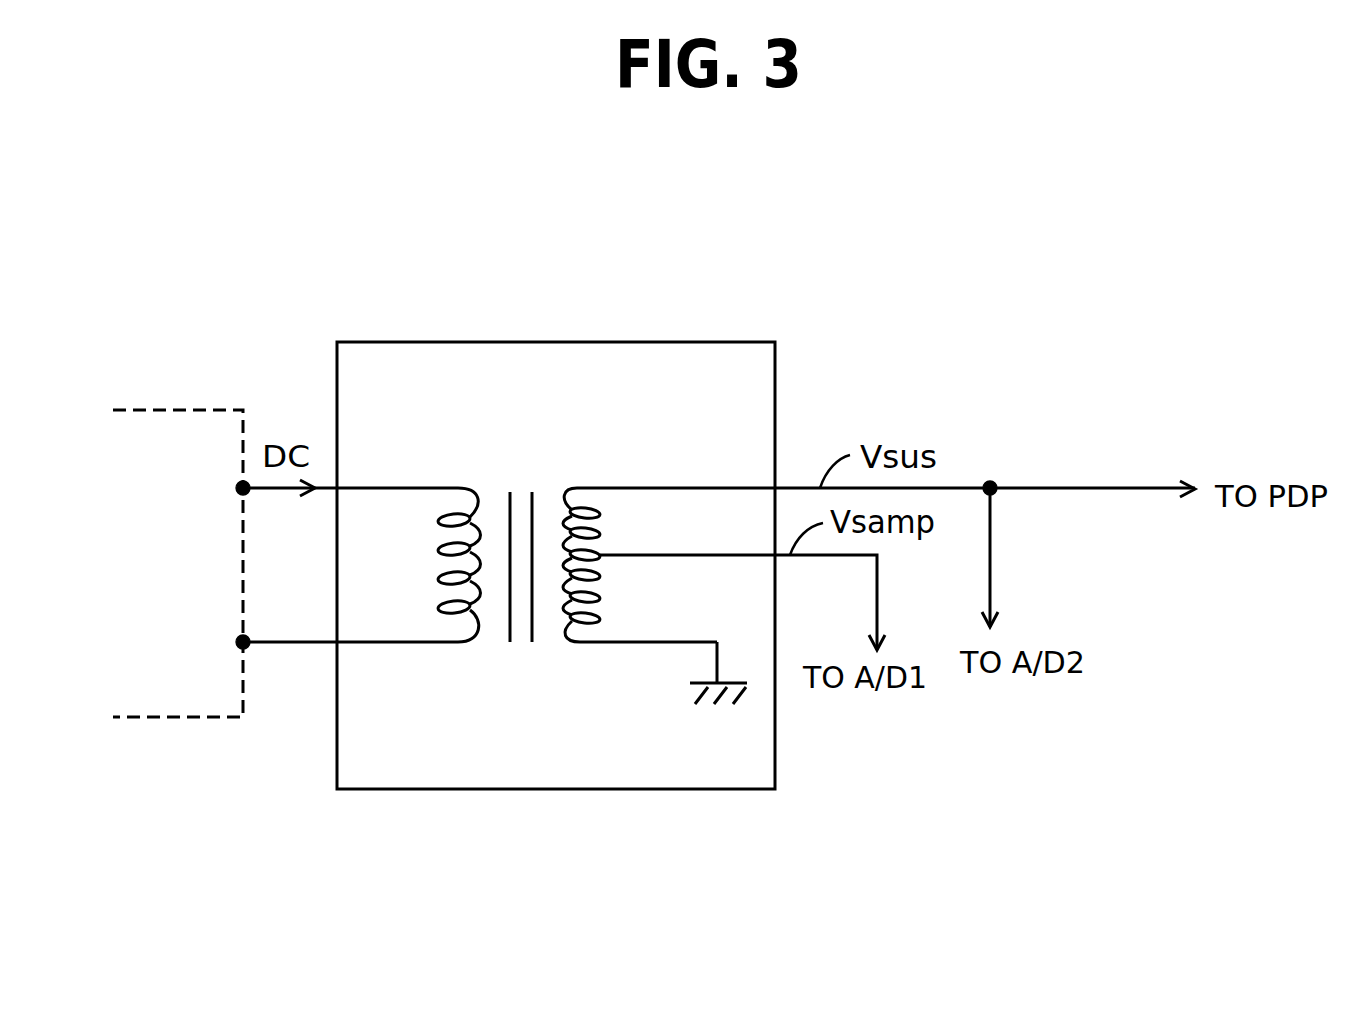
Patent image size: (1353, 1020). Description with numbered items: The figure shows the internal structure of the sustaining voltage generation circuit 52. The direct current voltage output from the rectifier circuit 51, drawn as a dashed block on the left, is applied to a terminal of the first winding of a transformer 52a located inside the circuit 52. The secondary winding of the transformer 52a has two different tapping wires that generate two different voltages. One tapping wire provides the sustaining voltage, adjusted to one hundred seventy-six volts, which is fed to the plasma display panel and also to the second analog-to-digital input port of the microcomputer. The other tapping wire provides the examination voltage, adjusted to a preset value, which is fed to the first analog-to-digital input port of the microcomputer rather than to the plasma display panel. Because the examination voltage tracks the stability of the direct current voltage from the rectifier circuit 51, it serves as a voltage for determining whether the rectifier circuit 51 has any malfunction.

The rectifier circuit 51 is at (175, 410).
The sustaining voltage generation circuit 52 is at (628, 342).
The transformer 52a is at (556, 537).